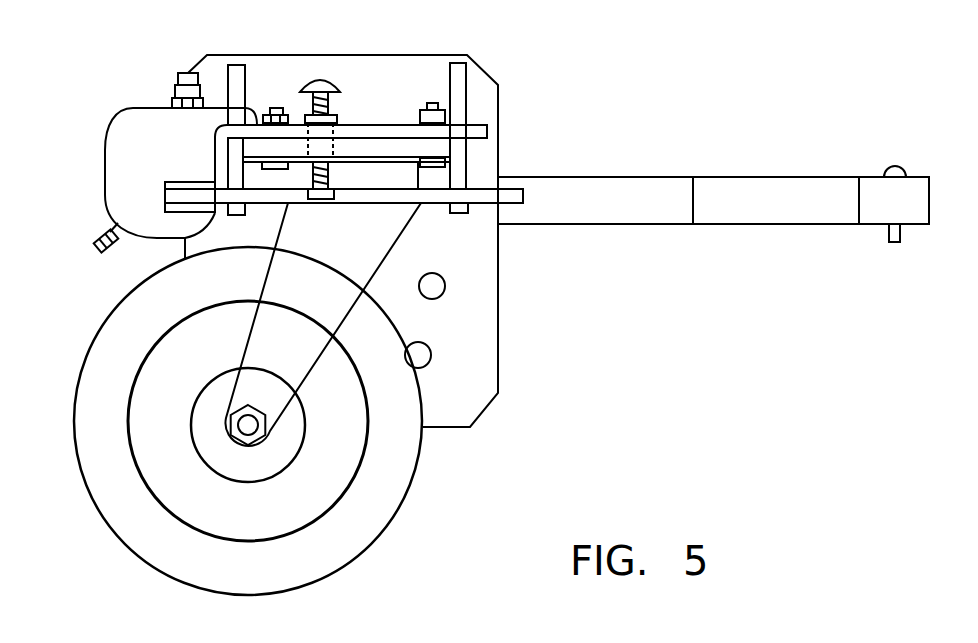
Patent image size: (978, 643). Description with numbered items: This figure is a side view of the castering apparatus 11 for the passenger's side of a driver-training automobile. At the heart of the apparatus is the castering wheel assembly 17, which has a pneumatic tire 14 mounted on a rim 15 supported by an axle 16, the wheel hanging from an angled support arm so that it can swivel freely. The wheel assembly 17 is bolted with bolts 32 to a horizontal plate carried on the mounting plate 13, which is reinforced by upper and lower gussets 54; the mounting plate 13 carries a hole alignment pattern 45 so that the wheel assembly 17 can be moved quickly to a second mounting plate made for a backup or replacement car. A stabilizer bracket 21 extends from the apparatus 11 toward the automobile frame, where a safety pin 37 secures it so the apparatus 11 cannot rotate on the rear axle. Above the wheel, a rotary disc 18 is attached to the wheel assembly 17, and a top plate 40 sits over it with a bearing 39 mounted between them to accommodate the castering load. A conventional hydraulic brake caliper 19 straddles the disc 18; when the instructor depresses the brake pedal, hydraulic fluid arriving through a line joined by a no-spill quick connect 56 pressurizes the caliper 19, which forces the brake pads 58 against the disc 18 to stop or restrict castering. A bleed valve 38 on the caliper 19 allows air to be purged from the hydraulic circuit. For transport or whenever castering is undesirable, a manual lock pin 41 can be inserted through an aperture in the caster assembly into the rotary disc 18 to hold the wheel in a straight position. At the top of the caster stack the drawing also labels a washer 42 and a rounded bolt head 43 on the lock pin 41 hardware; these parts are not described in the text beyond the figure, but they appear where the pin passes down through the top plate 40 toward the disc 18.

The castering apparatus 11 is at (493, 90).
The mounting plate 13 is at (495, 260).
The pneumatic tire 14 is at (403, 500).
The rim 15 is at (268, 533).
The axle 16 is at (262, 412).
The castering wheel assembly 17 is at (297, 262).
The disc 18 is at (525, 190).
The brake caliper 19 is at (143, 108).
The stabilizer bracket 21 is at (767, 220).
The bolt 32 is at (275, 108).
The safety pin 37 is at (895, 170).
The bleed valve 38 is at (107, 222).
The bearing 39 is at (375, 190).
The top plate 40 is at (470, 142).
The manual lock pin 41 is at (322, 102).
The washer 42 is at (337, 120).
The bolt head 43 is at (330, 80).
The hole alignment pattern 45 is at (430, 355).
The gusset 54 is at (237, 62).
The quick connect 56 is at (192, 72).
The brake pad 58 is at (198, 180).